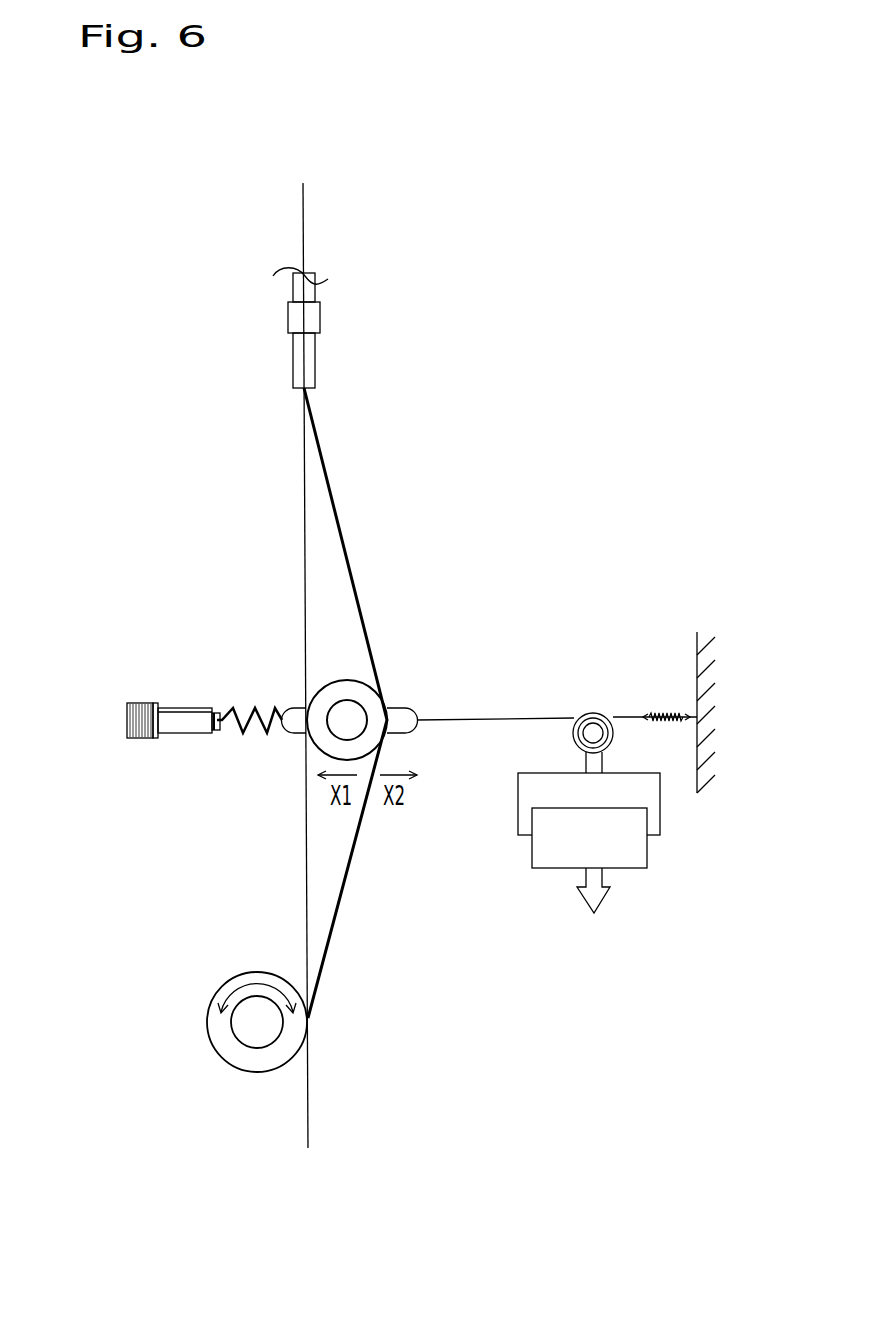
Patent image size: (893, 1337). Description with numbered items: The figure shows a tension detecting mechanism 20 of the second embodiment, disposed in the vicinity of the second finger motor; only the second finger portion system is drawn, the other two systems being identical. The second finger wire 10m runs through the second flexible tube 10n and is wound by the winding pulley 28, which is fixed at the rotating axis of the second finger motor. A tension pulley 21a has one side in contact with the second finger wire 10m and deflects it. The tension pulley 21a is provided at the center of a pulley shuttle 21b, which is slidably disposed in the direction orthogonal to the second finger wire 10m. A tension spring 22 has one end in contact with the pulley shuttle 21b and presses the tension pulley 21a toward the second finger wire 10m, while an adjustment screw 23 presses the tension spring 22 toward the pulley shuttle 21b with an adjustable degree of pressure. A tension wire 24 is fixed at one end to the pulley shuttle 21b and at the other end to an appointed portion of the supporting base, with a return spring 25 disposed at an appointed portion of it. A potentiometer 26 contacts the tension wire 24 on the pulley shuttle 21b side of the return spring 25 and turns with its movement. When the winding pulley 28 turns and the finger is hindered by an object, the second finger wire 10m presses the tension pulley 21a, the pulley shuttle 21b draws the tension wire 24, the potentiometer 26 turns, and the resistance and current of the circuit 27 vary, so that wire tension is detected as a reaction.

The tension detecting mechanism 20 is at (209, 182).
The second flexible tube 10n is at (293, 287).
The second finger wire 10m is at (317, 450).
The tension pulley 21a is at (323, 687).
The pulley shuttle 21b is at (295, 730).
The tension spring 22 is at (243, 728).
The adjustment screw 23 is at (156, 740).
The tension wire 24 is at (448, 721).
The return spring 25 is at (670, 713).
The potentiometer 26 is at (616, 740).
The circuit 27 is at (662, 822).
The winding pulley 28 is at (238, 1057).